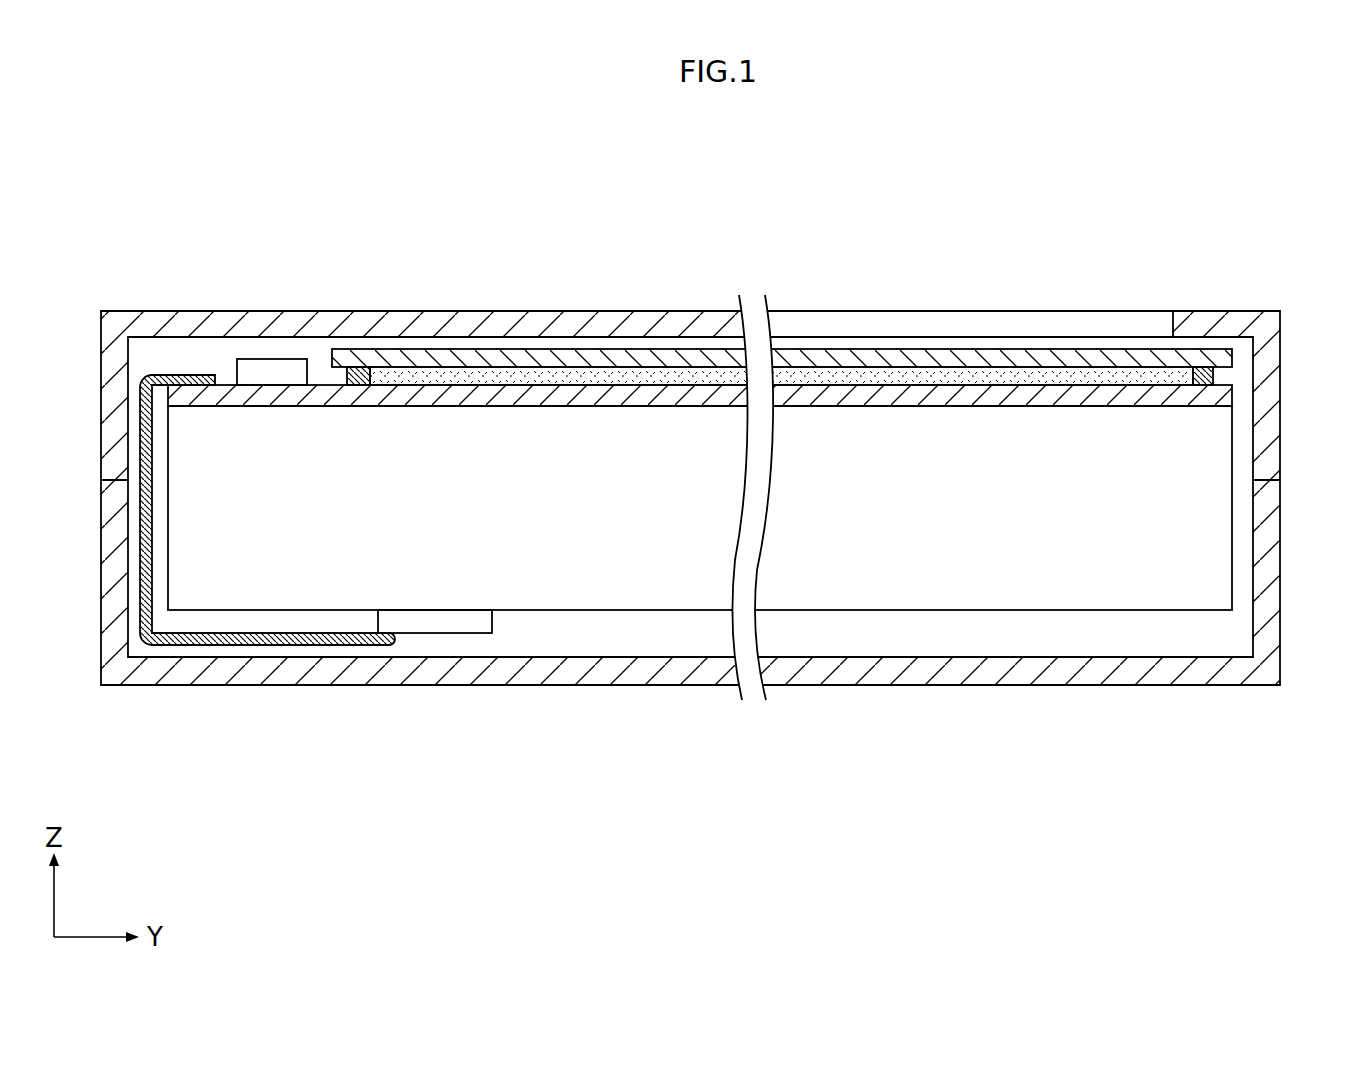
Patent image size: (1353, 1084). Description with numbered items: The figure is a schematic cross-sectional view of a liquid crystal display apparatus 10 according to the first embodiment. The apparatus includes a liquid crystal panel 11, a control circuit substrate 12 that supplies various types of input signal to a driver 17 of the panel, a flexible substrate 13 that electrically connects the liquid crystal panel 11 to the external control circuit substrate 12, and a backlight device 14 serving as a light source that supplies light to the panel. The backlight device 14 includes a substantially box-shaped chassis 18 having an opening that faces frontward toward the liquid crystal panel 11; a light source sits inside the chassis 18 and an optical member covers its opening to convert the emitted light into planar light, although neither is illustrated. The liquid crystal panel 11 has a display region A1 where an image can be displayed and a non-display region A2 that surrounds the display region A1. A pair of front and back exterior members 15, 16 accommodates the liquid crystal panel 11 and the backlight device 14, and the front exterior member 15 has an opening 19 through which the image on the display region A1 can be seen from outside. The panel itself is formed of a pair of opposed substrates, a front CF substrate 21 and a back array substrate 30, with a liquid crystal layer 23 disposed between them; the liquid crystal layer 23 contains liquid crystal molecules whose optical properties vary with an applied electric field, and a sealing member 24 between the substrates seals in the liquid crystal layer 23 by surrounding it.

The liquid crystal display apparatus 10 is at (1123, 243).
The liquid crystal panel 11 is at (877, 350).
The control circuit substrate 12 is at (461, 624).
The flexible substrate 13 is at (145, 375).
The backlight device 14 is at (577, 610).
The front exterior member 15 is at (1267, 366).
The back exterior member 16 is at (1267, 572).
The driver 17 is at (272, 372).
The chassis 18 is at (680, 555).
The opening 19 is at (378, 324).
The CF substrate 21 is at (530, 350).
The liquid crystal layer 23 is at (578, 375).
The sealing member 24 is at (358, 368).
The array substrate 30 is at (693, 392).
The display region A1 is at (445, 384).
The non-display region A2 is at (223, 345).